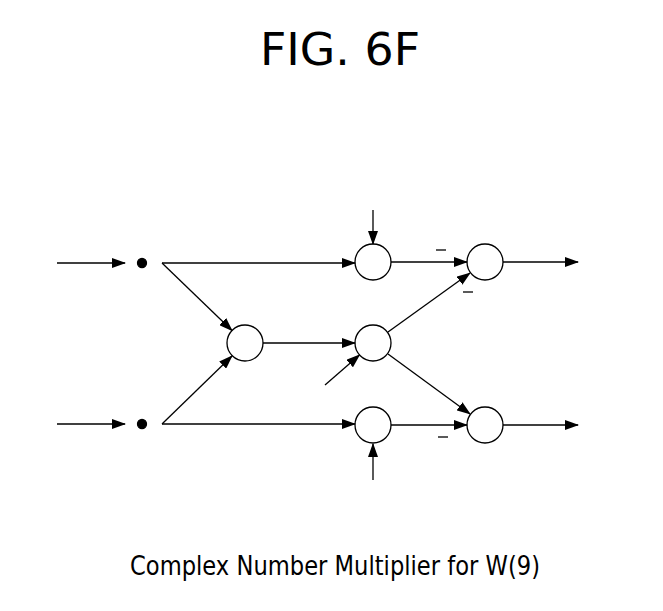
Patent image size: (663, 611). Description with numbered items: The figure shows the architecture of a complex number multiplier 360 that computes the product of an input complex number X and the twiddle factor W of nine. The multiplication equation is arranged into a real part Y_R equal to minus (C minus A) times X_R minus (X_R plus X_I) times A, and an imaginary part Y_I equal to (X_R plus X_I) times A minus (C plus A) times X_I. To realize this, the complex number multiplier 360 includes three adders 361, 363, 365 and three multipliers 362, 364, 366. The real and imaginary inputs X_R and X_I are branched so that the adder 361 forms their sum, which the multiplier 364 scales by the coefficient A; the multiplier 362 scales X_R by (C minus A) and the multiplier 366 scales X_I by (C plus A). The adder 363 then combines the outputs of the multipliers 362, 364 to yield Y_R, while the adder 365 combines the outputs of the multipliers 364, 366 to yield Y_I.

The complex number multiplier 360 is at (577, 140).
The adder 361 is at (252, 327).
The multiplier 362 is at (386, 249).
The adder 363 is at (486, 244).
The multiplier 364 is at (391, 345).
The adder 365 is at (486, 407).
The multiplier 366 is at (386, 440).